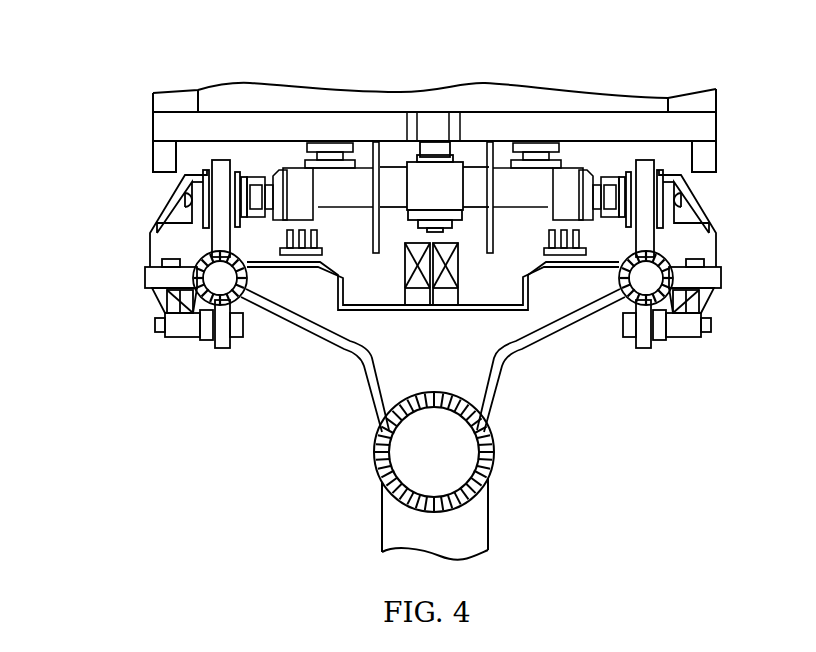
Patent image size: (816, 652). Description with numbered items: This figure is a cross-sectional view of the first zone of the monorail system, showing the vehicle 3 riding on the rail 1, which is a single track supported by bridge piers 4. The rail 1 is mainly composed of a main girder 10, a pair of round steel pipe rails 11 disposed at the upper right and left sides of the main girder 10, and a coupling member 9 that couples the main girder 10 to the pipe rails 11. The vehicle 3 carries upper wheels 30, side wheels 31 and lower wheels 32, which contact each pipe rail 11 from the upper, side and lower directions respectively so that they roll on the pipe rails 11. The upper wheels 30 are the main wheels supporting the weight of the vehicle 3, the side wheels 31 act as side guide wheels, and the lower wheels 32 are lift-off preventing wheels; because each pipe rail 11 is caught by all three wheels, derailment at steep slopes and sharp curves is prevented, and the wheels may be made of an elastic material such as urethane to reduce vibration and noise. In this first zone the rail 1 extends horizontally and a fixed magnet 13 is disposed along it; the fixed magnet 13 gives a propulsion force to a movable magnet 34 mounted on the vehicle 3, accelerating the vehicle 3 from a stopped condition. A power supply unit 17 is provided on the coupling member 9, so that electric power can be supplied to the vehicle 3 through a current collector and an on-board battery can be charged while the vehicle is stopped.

The rail 1 is at (363, 363).
The vehicle 3 is at (150, 115).
The bridge pier 4 is at (453, 537).
The coupling member 9 is at (445, 352).
The main girder 10 is at (437, 451).
The pipe rail 11 is at (193, 297).
The fixed magnet 13 is at (453, 278).
The power supply unit 17 is at (292, 257).
The upper wheel 30 is at (223, 185).
The side wheel 31 is at (157, 273).
The lower wheel 32 is at (222, 333).
The movable magnet 34 is at (433, 222).